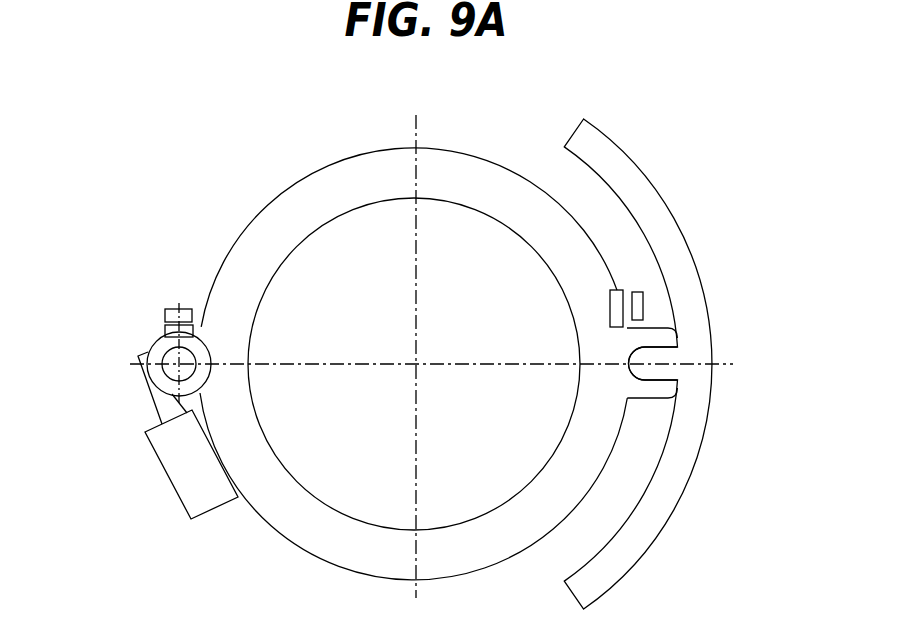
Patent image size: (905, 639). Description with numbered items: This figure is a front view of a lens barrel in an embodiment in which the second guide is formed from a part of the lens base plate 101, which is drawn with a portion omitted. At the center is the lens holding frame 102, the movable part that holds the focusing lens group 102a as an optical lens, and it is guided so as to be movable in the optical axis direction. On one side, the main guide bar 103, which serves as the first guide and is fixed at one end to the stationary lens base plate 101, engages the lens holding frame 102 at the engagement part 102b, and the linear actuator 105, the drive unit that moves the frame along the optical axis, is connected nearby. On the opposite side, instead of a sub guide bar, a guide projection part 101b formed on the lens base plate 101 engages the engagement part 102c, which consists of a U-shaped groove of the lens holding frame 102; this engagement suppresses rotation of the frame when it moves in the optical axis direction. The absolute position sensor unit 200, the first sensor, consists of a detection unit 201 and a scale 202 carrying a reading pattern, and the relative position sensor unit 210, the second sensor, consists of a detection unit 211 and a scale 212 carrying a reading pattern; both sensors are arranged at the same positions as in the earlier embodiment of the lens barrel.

The lens base plate 101 is at (605, 153).
The guide projection part 101b is at (667, 370).
The lens holding frame 102 is at (443, 170).
The focusing lens group 102a is at (463, 237).
The engagement part 102b is at (163, 380).
The engagement part 102c is at (677, 342).
The main guide bar 103 is at (160, 350).
The linear actuator 105 is at (177, 472).
The absolute position sensor unit 200 is at (130, 265).
The detection unit 201 is at (178, 309).
The scale 202 is at (193, 234).
The relative position sensor unit 210 is at (720, 257).
The detection unit 211 is at (643, 303).
The scale 212 is at (623, 287).